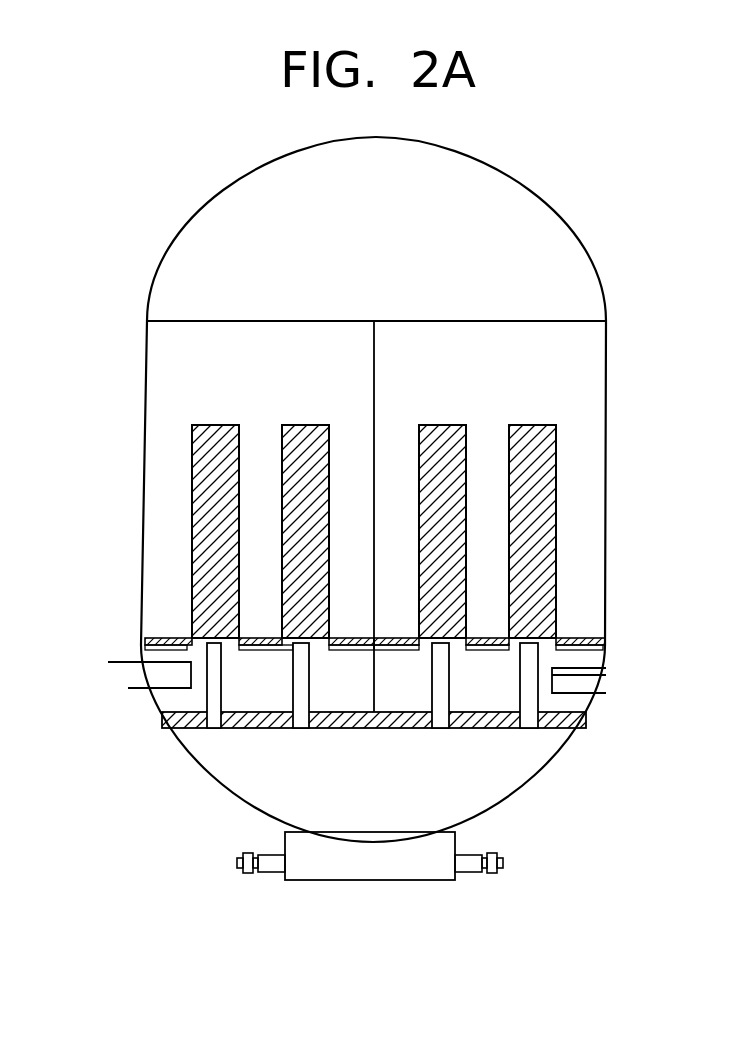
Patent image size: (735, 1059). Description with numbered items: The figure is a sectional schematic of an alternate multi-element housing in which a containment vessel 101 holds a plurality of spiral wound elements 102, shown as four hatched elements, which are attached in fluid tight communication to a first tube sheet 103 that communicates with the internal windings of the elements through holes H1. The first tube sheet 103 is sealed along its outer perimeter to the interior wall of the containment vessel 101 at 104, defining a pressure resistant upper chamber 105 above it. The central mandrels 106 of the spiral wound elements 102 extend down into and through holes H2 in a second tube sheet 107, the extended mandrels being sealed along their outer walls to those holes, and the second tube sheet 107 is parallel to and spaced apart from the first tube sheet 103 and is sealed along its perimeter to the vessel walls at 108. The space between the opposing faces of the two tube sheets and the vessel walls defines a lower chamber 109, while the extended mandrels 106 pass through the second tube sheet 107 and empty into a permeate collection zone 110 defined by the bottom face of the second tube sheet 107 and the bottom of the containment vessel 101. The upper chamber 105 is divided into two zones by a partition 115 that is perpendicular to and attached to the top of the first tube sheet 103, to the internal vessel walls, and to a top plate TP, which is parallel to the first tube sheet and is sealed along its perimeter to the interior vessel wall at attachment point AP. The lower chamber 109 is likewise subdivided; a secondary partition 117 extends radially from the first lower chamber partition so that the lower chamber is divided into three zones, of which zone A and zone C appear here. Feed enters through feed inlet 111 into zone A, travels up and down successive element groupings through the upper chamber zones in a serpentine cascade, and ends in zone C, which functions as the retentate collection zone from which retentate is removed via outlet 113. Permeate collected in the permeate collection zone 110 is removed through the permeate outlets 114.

The containment vessel 101 is at (570, 235).
The spiral wound elements 102 is at (558, 462).
The first tube sheet 103 is at (570, 640).
The first tube sheet perimeter attachment 104 is at (600, 648).
The upper chamber 105 is at (467, 198).
The central mandrels 106 is at (542, 697).
The second tube sheet 107 is at (265, 728).
The second tube sheet perimeter attachment 108 is at (163, 720).
The lower chamber 109 is at (237, 665).
The permeate collection zone 110 is at (505, 773).
The feed inlet 111 is at (197, 663).
The retentate outlet 113 is at (547, 665).
The permeate outlet 114 is at (228, 863).
The partition 115 is at (366, 357).
The secondary partition 117 is at (374, 688).
The top plate TP is at (565, 323).
The attachment point AP is at (604, 322).
The lower chamber zone A is at (242, 690).
The lower chamber zone C is at (478, 695).
The holes in first tube sheet H1 is at (293, 643).
The holes in second tube sheet H2 is at (290, 728).